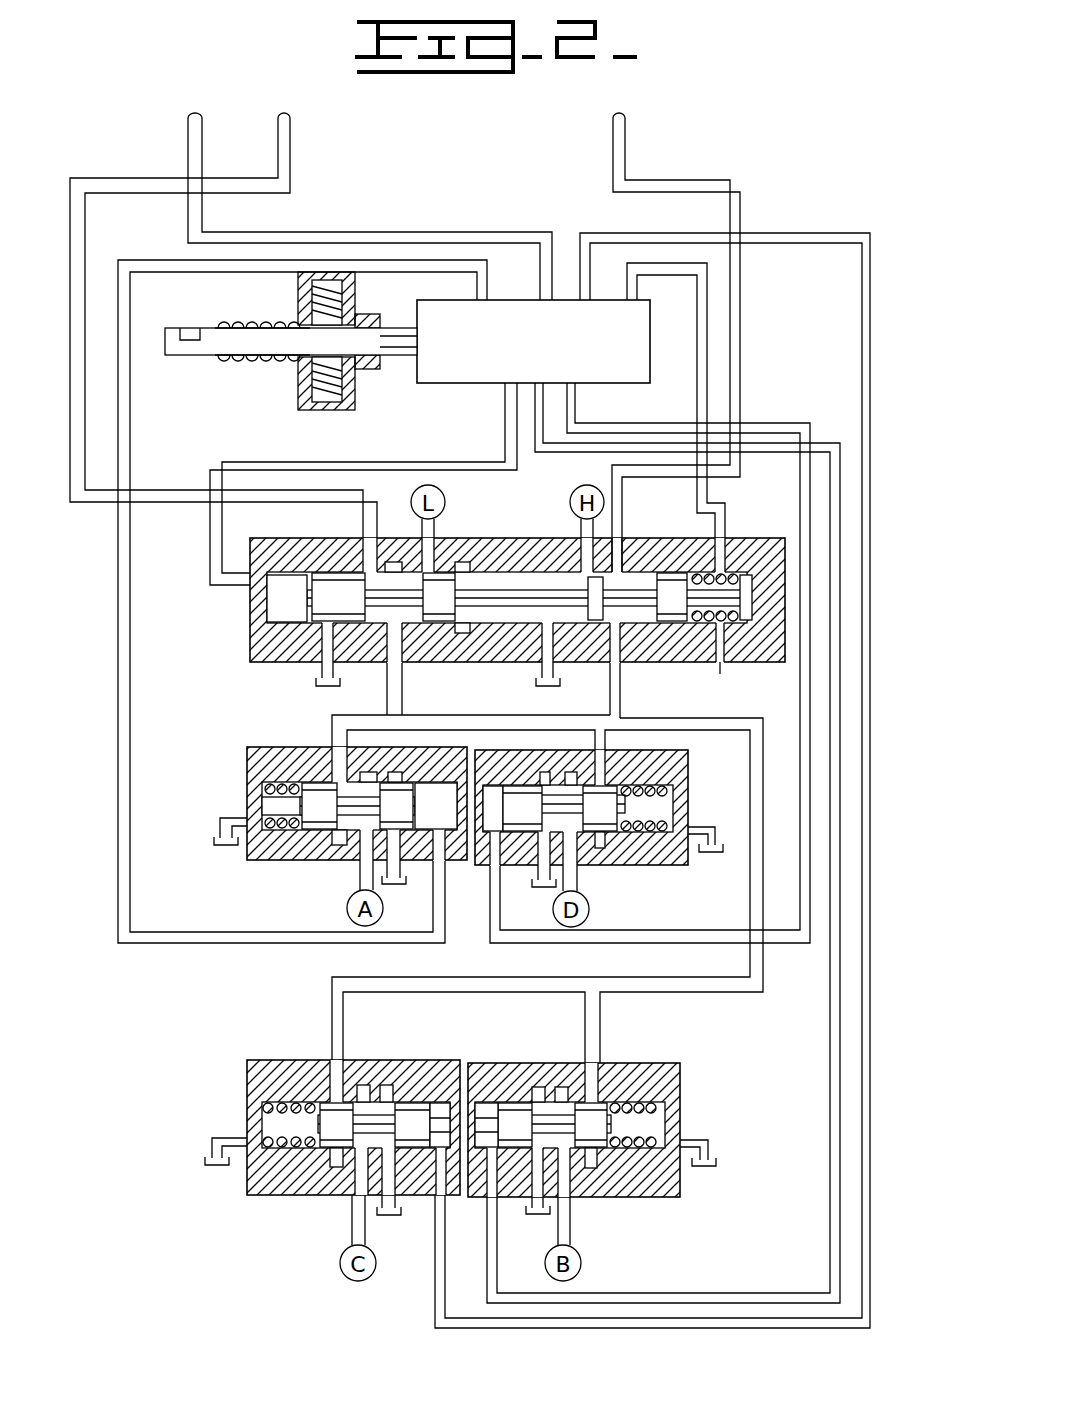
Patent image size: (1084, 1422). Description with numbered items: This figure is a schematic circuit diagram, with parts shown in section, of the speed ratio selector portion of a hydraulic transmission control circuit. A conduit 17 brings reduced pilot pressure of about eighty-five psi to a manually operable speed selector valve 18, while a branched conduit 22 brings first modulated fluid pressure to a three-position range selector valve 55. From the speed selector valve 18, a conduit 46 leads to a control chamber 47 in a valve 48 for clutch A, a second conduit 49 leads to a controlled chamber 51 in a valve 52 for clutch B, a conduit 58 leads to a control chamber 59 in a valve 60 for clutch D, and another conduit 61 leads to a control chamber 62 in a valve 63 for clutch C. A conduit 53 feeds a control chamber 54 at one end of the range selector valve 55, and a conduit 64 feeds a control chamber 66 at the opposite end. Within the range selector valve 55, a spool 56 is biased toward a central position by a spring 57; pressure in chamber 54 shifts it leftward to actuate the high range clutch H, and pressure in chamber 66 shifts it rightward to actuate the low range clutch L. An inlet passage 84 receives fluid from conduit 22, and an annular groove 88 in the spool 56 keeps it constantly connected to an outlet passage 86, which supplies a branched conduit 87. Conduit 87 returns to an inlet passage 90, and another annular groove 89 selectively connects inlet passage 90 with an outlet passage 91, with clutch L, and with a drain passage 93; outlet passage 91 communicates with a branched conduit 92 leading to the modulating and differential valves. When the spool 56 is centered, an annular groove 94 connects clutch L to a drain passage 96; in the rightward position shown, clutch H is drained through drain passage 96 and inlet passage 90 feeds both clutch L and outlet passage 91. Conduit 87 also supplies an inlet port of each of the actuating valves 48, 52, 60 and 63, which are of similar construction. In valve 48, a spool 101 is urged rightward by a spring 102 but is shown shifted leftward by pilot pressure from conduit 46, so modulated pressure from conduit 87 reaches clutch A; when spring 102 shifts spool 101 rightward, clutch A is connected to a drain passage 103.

The conduit 17 is at (553, 233).
The speed selector valve 18 is at (655, 342).
The branched conduit 22 is at (622, 163).
The conduit 46 is at (440, 268).
The control chamber 47 is at (447, 835).
The valve 48 is at (300, 868).
The second conduit 49 is at (582, 450).
The controlled chamber 51 is at (488, 1145).
The valve 52 is at (690, 1115).
The conduit 53 is at (698, 406).
The control chamber 54 is at (723, 573).
The range selector valve 55 is at (525, 532).
The spool 56 is at (488, 596).
The spring 57 is at (720, 640).
The conduit 58 is at (572, 418).
The control chamber 59 is at (495, 788).
The valve 60 is at (690, 805).
The conduit 61 is at (650, 237).
The control chamber 62 is at (443, 1107).
The valve 63 is at (243, 1103).
The conduit 64 is at (488, 462).
The control chamber 66 is at (285, 602).
The inlet passage 84 is at (616, 548).
The outlet passage 86 is at (608, 652).
The branched conduit 87 is at (712, 718).
The annular groove 88 is at (643, 590).
The annular groove 89 is at (338, 597).
The inlet passage 90 is at (392, 652).
The outlet passage 91 is at (375, 545).
The branched conduit 92 is at (168, 498).
The drain passage 93 is at (320, 661).
The annular groove 94 is at (561, 580).
The drain passage 96 is at (540, 668).
The spool 101 is at (392, 800).
The spring 102 is at (267, 797).
The drain passage 103 is at (403, 868).